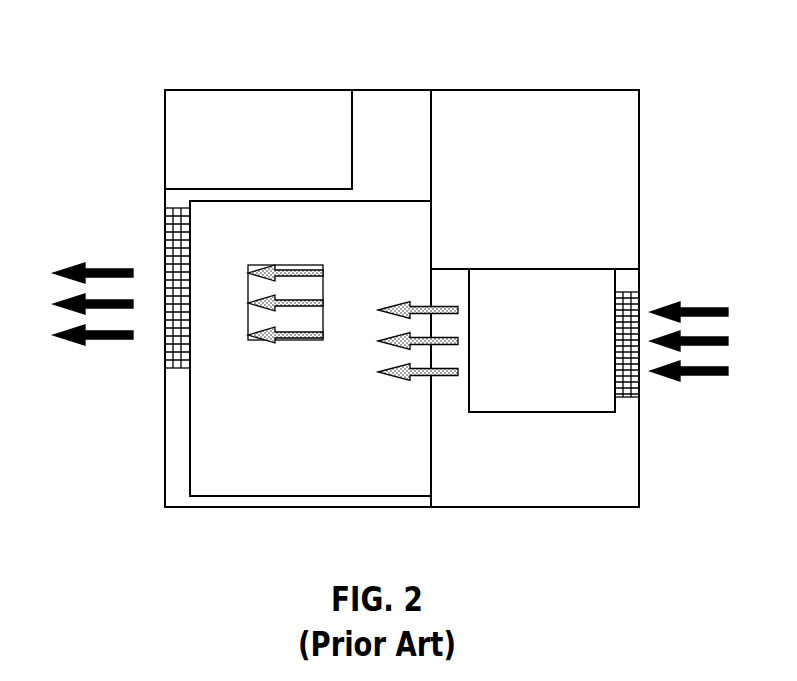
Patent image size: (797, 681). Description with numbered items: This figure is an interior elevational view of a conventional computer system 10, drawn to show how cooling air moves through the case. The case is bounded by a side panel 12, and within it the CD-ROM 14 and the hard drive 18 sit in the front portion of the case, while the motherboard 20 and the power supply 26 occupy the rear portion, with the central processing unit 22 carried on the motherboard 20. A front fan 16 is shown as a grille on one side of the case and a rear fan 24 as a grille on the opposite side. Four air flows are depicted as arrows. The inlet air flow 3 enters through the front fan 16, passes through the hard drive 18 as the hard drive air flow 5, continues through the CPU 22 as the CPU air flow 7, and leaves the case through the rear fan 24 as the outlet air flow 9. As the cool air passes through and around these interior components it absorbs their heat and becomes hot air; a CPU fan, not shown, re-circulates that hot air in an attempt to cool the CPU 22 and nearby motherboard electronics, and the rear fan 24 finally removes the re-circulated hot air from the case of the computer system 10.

The computer system 10 is at (655, 62).
The side panel 12 is at (565, 508).
The CD-ROM 14 is at (640, 155).
The front fan 16 is at (640, 388).
The hard drive 18 is at (540, 412).
The motherboard 20 is at (189, 462).
The central processing unit (CPU) 22 is at (213, 322).
The rear fan 24 is at (165, 255).
The power supply 26 is at (165, 115).
The inlet air flow 3 is at (718, 373).
The hard drive air flow 5 is at (420, 305).
The CPU air flow 7 is at (290, 340).
The outlet air flow 9 is at (73, 265).